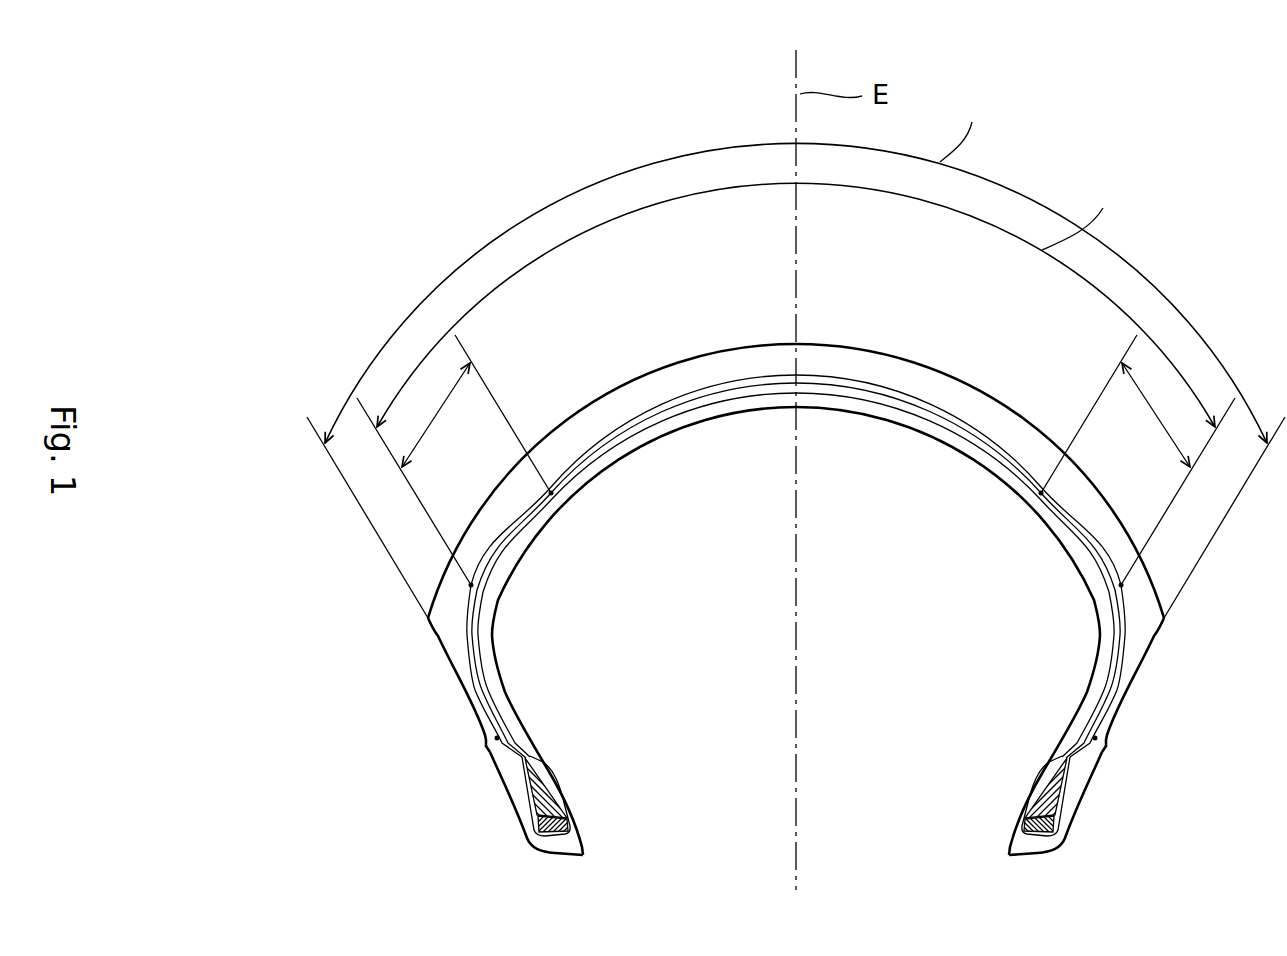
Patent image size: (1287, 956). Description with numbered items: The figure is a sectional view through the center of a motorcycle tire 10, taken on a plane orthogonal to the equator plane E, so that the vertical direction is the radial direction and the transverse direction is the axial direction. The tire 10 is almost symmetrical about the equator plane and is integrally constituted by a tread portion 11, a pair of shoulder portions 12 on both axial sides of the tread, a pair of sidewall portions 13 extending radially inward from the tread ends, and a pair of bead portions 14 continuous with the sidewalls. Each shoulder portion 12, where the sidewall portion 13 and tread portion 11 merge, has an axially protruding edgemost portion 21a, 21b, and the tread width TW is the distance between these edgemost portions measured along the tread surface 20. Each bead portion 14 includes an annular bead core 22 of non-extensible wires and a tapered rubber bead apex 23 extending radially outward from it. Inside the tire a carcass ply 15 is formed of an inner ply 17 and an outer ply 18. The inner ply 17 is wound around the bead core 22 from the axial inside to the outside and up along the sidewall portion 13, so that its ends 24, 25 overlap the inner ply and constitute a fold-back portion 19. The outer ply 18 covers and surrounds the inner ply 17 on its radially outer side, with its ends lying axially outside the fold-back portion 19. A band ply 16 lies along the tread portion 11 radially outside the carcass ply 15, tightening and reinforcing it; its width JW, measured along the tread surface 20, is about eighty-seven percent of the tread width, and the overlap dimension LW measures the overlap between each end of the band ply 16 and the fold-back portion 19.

The tire 10 is at (1049, 156).
The tread portion 11 is at (753, 332).
The shoulder portion 12 is at (432, 570).
The sidewall portion 13 is at (458, 738).
The bead portion 14 is at (796, 809).
The carcass ply 15 is at (809, 377).
The band ply 16 is at (912, 395).
The inner ply 17 is at (968, 455).
The outer ply 18 is at (707, 395).
The fold-back portion 19 is at (479, 635).
The tread surface 20 is at (676, 357).
The edgemost portion 21a is at (1166, 617).
The edgemost portion 21b is at (426, 617).
The bead core 22 is at (796, 844).
The bead apex 23 is at (548, 793).
The end of the inner ply 24 is at (1043, 492).
The end of the inner ply 25 is at (549, 492).